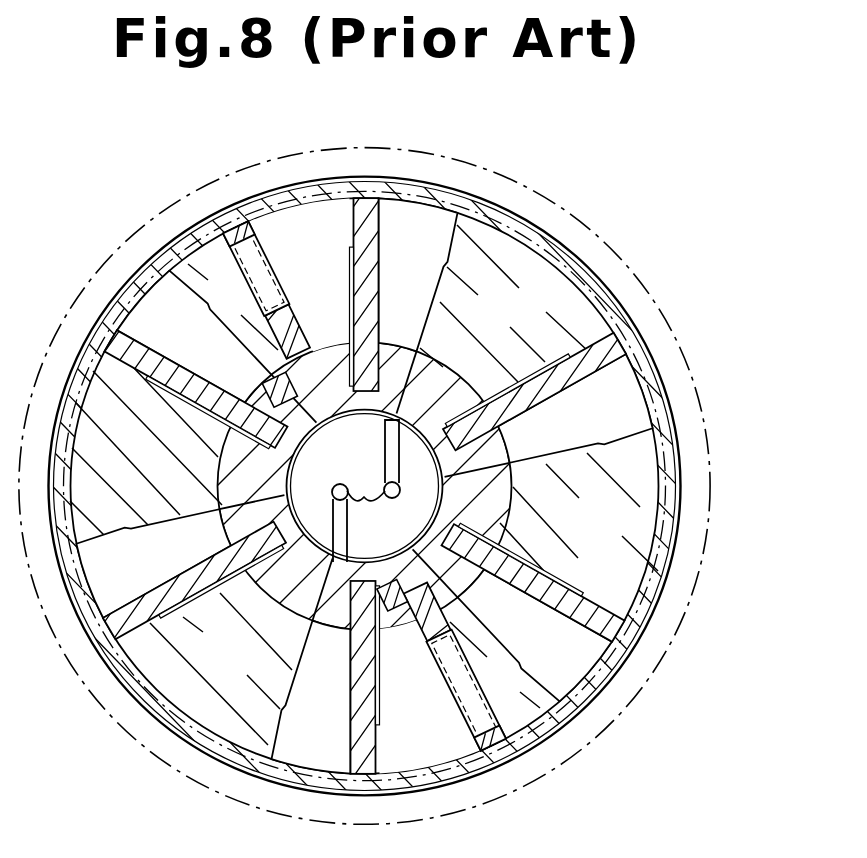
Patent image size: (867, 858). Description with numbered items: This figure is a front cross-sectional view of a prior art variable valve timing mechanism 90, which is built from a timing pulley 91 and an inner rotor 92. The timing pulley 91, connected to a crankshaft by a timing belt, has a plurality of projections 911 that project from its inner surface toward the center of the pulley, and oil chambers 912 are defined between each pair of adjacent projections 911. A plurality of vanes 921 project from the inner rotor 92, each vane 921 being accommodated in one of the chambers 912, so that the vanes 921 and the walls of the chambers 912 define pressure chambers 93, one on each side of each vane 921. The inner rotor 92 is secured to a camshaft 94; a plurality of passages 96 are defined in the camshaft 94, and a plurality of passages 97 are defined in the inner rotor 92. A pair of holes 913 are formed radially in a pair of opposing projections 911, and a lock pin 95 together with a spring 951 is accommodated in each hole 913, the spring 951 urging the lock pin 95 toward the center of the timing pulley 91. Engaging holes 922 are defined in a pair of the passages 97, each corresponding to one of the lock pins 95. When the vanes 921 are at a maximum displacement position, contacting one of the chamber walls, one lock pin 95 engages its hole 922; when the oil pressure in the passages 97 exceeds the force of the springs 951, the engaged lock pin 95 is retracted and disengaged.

The variable valve timing mechanism 90 is at (611, 220).
The timing pulley 91 is at (614, 296).
The projections 911 is at (540, 318).
The oil chambers 912 is at (370, 429).
The holes 913 is at (268, 220).
The inner rotor 92 is at (365, 450).
The vanes 921 is at (380, 268).
The engaging holes 922 is at (296, 388).
The pressure chambers 93 is at (364, 486).
The camshaft 94 is at (376, 447).
The lock pin 95 is at (300, 342).
The spring 951 is at (270, 261).
The passages 96 is at (366, 507).
The passages 97 is at (354, 548).